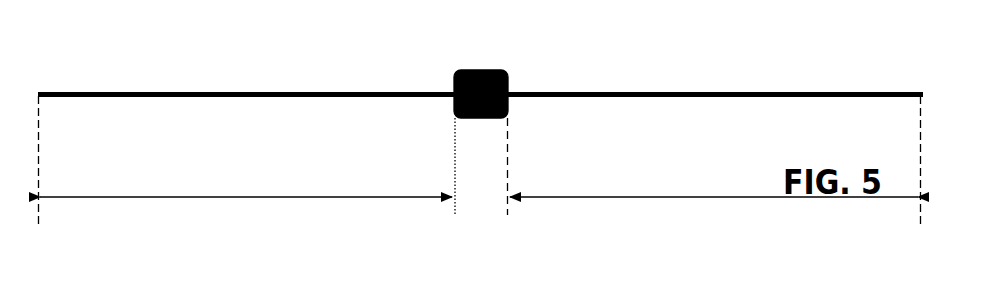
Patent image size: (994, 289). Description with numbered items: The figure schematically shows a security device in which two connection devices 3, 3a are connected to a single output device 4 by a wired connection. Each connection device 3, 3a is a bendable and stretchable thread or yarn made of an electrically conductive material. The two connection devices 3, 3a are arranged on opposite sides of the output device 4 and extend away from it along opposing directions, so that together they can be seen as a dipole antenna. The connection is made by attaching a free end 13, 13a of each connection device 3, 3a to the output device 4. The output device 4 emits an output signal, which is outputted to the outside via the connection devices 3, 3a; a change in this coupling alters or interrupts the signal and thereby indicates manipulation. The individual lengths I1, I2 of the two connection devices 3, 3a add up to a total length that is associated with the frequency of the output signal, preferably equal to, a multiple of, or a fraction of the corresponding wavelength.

The connection device 3 is at (305, 92).
The connection device 3a is at (608, 92).
The output device 4 is at (485, 70).
The free end 13 is at (453, 97).
The free end 13a is at (509, 97).
The individual length I1 is at (203, 201).
The individual length I2 is at (736, 201).